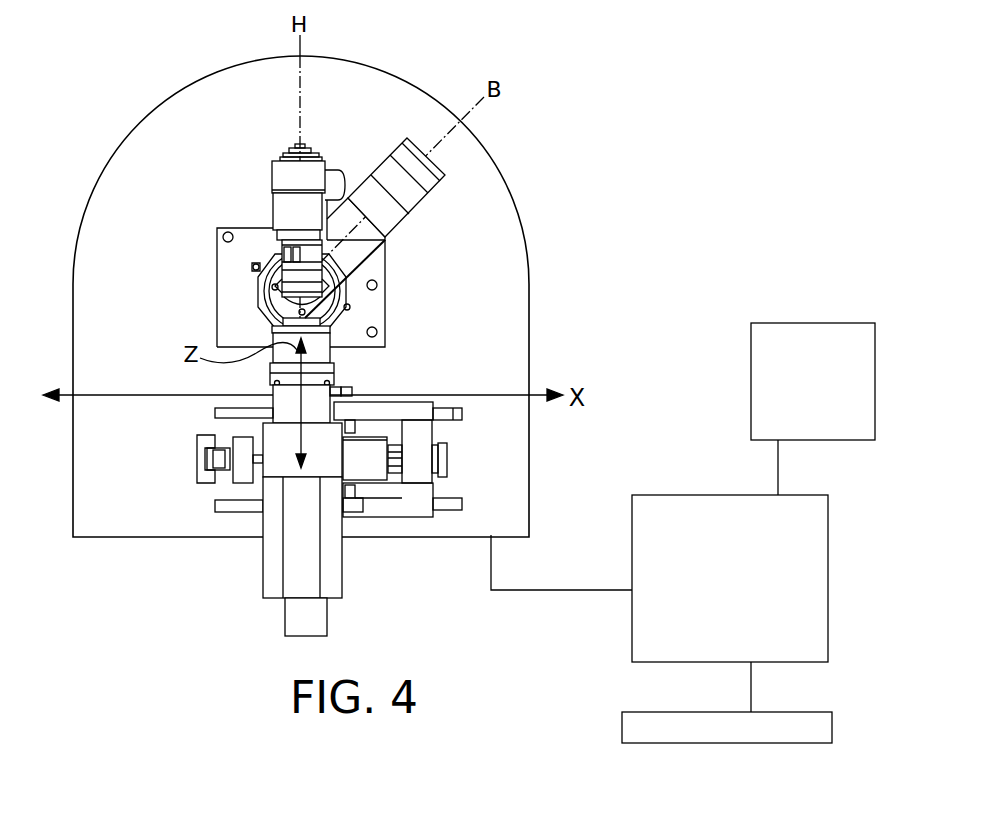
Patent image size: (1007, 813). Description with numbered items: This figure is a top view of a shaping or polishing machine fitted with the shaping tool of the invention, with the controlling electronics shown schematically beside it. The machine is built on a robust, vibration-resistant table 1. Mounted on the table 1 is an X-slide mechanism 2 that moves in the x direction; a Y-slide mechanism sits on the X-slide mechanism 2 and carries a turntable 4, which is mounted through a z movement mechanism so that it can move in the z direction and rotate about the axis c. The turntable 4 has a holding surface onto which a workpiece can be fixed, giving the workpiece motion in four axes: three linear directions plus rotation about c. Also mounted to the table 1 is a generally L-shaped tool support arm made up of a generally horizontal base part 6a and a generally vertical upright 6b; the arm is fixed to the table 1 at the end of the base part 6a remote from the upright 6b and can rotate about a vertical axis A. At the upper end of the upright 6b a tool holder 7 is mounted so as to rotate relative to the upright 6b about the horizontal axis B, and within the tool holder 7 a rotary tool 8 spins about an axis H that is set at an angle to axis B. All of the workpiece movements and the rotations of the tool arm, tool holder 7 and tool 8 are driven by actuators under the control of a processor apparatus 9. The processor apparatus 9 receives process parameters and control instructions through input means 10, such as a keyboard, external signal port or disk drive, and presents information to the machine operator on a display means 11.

The table 1 is at (95, 505).
The X-slide mechanism 2 is at (398, 510).
The turntable 4 is at (347, 306).
The base part 6a is at (355, 268).
The upright 6b is at (430, 195).
The tool holder 7 is at (333, 212).
The rotary tool 8 is at (263, 303).
The processor apparatus 9 is at (730, 603).
The input means 10 is at (635, 728).
The display means 11 is at (813, 409).